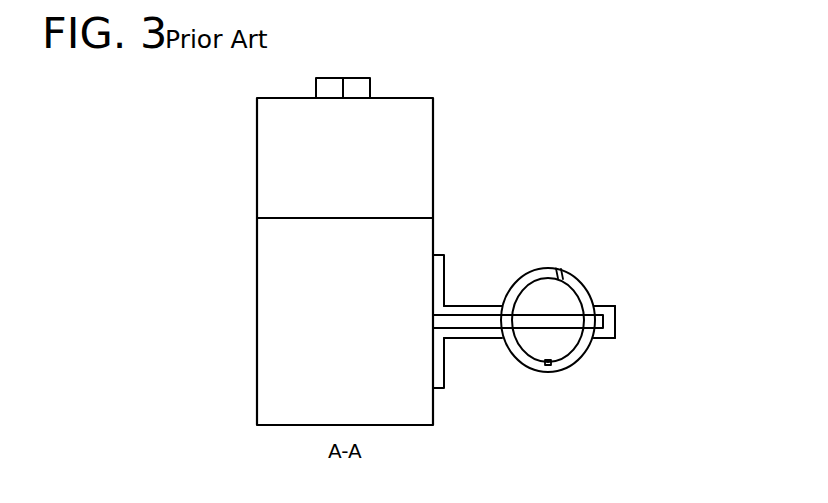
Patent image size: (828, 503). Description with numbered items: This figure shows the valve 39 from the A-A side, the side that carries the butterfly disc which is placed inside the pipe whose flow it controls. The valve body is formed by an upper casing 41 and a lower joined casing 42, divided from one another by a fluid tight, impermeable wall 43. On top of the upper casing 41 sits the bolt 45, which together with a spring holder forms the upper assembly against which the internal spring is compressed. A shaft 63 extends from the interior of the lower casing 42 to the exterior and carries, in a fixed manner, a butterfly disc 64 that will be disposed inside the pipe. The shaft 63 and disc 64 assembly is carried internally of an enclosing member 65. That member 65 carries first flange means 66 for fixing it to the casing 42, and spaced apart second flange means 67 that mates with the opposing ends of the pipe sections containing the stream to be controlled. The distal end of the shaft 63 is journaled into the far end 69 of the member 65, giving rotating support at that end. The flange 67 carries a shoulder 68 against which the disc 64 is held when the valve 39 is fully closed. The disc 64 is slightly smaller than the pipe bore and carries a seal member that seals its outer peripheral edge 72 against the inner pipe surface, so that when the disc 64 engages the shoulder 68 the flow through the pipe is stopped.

The valve 39 is at (525, 138).
The upper casing 41 is at (433, 120).
The lower joined casing 42 is at (433, 232).
The fluid tight wall 43 is at (282, 218).
The bolt 45 is at (360, 78).
The shaft 63 is at (495, 329).
The butterfly disc 64 is at (567, 303).
The enclosing member 65 is at (552, 248).
The first flange means 66 is at (444, 280).
The second flange means 67 is at (563, 368).
The shoulder 68 is at (548, 366).
The far end 69 is at (617, 305).
The outer peripheral edge 72 is at (557, 276).